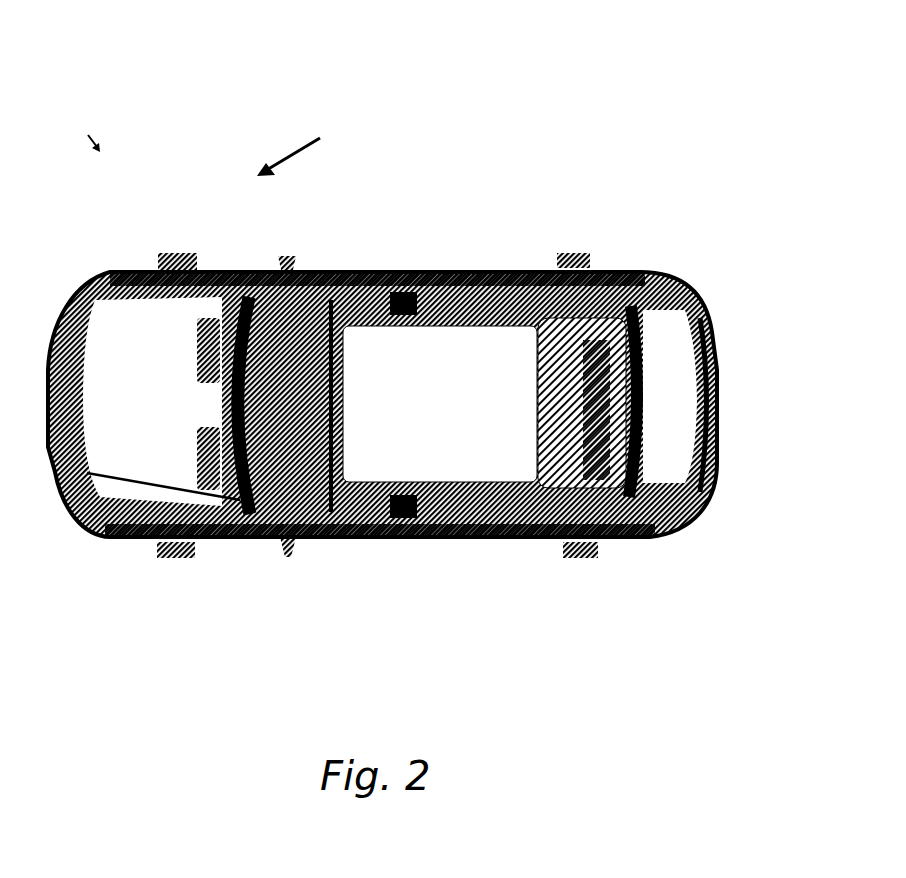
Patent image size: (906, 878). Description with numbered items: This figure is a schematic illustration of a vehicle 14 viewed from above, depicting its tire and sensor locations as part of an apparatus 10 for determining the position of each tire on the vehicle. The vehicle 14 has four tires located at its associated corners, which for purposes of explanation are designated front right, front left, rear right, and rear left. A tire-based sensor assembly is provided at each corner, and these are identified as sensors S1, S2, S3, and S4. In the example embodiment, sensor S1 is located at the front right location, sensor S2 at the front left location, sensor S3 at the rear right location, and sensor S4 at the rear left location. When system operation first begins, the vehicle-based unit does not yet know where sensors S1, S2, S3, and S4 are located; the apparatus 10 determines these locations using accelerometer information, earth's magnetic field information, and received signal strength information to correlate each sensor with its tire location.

The apparatus 10 is at (405, 283).
The vehicle 14 is at (665, 287).
The sensor S1 is at (178, 252).
The sensor S2 is at (178, 560).
The sensor S3 is at (573, 252).
The sensor S4 is at (580, 560).